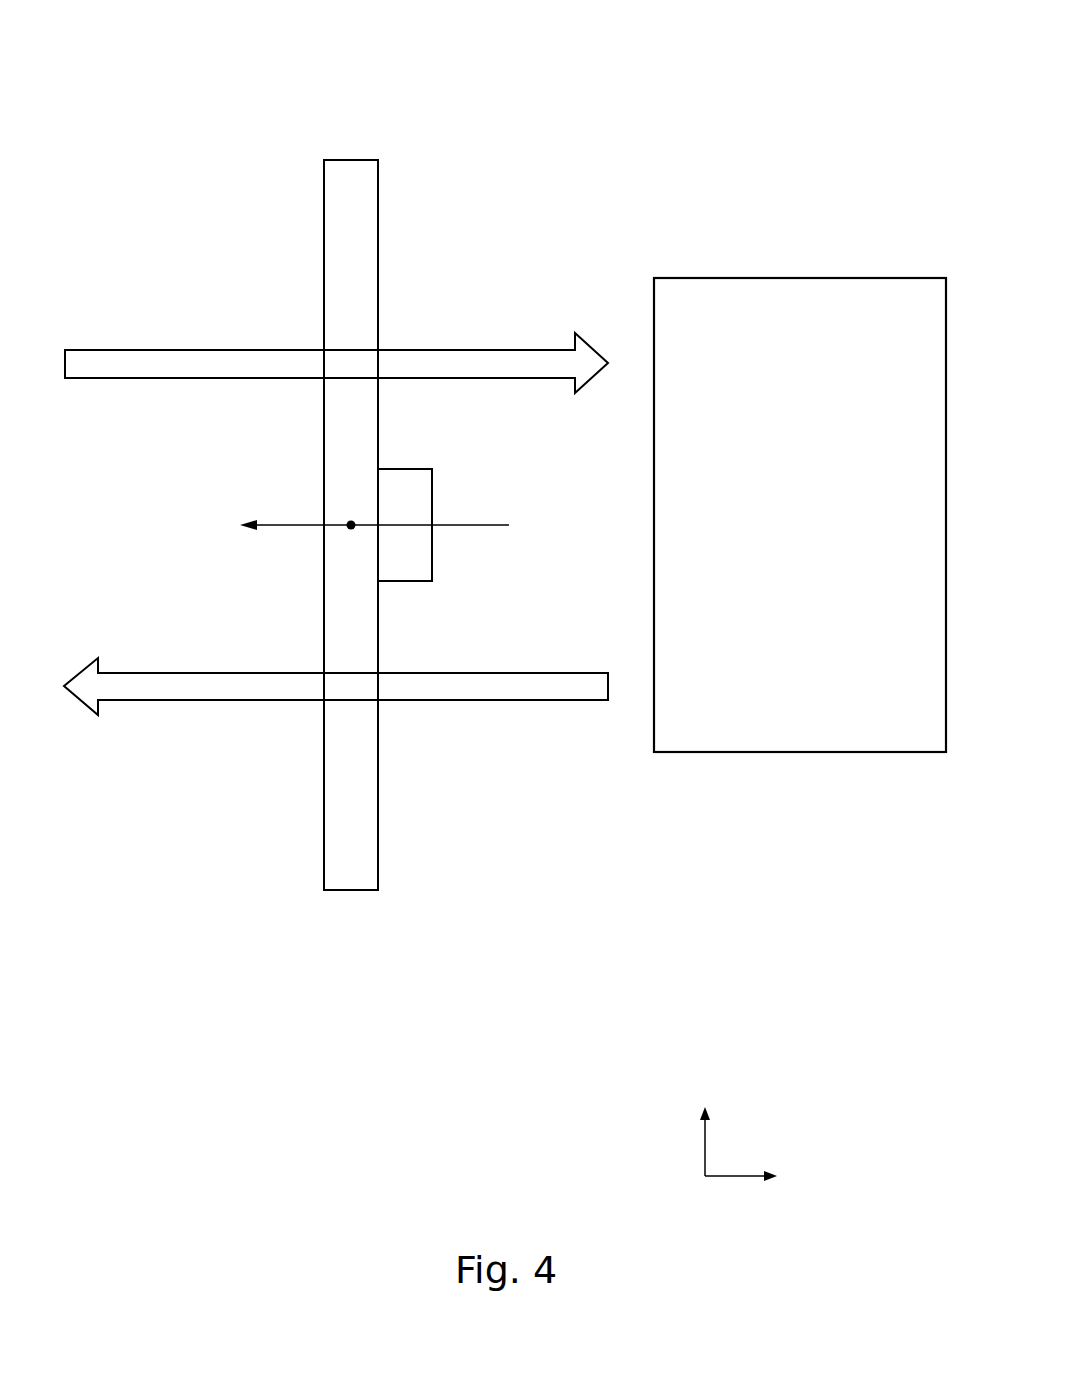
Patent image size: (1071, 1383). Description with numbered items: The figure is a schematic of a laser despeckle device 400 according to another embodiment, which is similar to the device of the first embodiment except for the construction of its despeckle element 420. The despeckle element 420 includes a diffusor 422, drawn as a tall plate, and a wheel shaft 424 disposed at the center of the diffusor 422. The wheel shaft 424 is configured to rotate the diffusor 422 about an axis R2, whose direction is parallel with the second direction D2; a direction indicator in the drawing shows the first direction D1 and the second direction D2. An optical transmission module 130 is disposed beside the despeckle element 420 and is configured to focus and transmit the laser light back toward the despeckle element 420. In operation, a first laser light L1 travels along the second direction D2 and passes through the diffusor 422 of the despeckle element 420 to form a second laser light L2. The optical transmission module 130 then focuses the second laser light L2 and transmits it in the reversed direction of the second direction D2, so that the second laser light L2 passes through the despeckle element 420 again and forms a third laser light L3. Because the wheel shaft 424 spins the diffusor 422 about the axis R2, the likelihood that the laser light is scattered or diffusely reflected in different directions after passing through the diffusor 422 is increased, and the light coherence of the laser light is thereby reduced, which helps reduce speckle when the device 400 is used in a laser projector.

The laser despeckle device 400 is at (76, 30).
The optical transmission module 130 is at (805, 285).
The despeckle element 420 is at (586, 440).
The diffusor 422 is at (365, 423).
The wheel shaft 424 is at (418, 547).
The axis R2 is at (290, 522).
The first laser light L1 is at (183, 350).
The second laser light L2 is at (480, 350).
The third laser light L3 is at (212, 672).
The first direction D1 is at (704, 1125).
The second direction D2 is at (764, 1176).